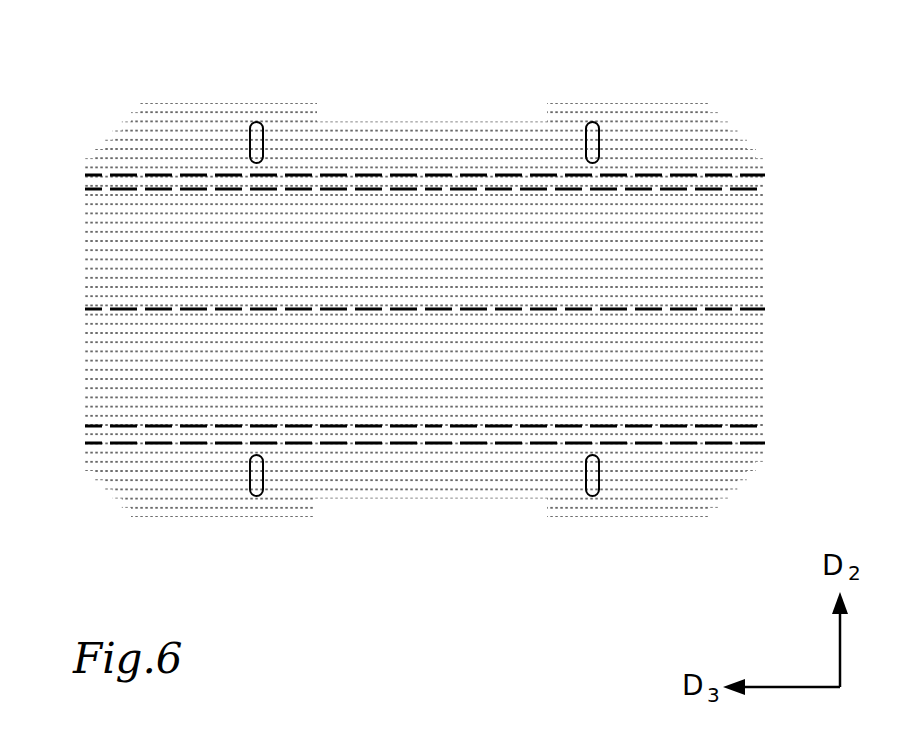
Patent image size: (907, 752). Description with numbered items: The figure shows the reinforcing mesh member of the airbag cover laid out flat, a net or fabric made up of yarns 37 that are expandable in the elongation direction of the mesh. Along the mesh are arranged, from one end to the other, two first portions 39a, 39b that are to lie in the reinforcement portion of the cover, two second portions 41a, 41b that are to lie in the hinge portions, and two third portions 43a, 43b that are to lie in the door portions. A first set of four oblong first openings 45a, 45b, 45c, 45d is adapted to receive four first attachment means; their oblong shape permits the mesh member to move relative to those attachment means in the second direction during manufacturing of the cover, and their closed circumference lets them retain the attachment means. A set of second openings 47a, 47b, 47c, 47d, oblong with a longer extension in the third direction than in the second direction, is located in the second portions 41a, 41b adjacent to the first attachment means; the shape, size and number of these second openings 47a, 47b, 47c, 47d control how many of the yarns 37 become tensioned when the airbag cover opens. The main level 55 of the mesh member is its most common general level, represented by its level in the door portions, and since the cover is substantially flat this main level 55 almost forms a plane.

The main level 55 is at (480, 306).
The yarns 37 is at (480, 315).
The first portion 39a is at (418, 134).
The first portion 39b is at (413, 490).
The second portion 41a is at (738, 181).
The second portion 41b is at (738, 433).
The third portion 43a is at (718, 236).
The third portion 43b is at (718, 378).
The first opening 45a is at (261, 134).
The first opening 45b is at (590, 126).
The first opening 45c is at (258, 488).
The first opening 45d is at (580, 490).
The second opening 47a is at (190, 183).
The second opening 47b is at (650, 183).
The second opening 47c is at (190, 435).
The second opening 47d is at (650, 437).